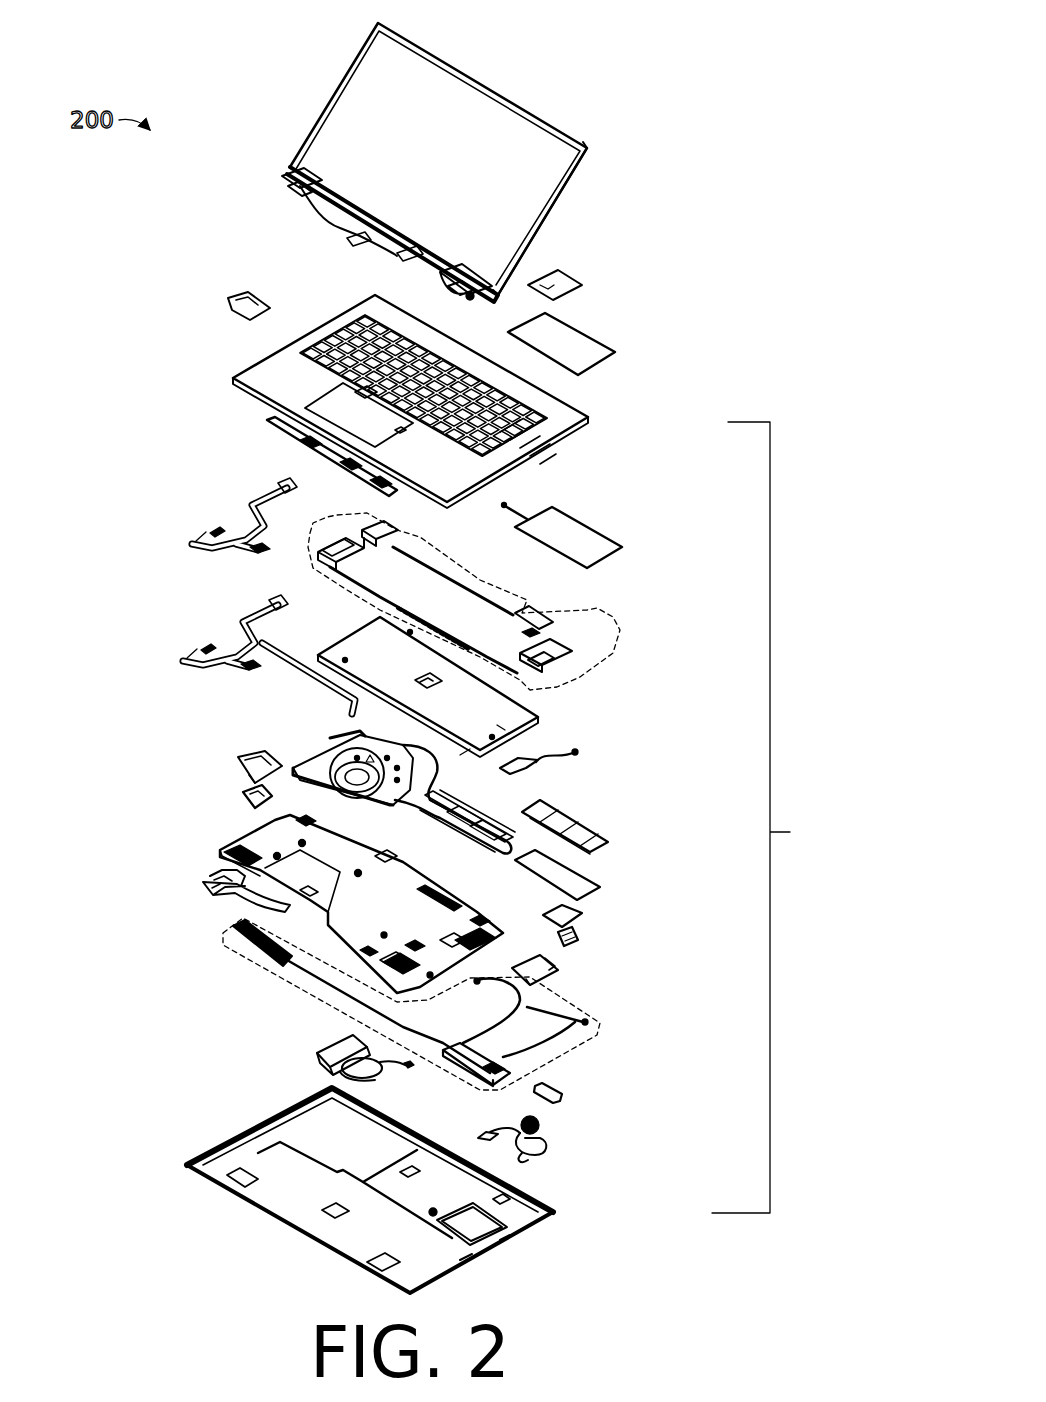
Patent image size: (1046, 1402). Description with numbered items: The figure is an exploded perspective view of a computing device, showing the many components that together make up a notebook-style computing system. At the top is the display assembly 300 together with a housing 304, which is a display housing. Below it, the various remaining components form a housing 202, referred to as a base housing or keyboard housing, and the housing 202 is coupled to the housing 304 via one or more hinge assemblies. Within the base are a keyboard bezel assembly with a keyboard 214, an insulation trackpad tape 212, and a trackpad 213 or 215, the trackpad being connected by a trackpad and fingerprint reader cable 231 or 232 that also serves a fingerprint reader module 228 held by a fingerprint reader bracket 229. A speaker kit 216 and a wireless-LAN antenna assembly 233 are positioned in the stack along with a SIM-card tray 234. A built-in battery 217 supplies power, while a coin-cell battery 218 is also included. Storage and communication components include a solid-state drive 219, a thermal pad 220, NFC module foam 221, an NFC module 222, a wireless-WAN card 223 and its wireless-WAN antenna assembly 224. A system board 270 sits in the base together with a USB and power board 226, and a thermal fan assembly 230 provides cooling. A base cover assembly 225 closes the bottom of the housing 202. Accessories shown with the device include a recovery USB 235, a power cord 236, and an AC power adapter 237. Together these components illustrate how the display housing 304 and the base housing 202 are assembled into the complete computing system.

The housing 202 is at (784, 817).
The display assembly 300 is at (502, 162).
The housing 304 is at (593, 160).
The insulation trackpad tape 212 is at (585, 283).
The trackpad 213 is at (588, 331).
The keyboard 214 is at (588, 422).
The trackpad 215 is at (583, 526).
The speaker kit 216 is at (530, 600).
The built-in battery 217 is at (535, 718).
The coin-cell battery 218 is at (565, 770).
The solid-state drive 219 is at (575, 817).
The thermal pad 220 is at (563, 875).
The NFC module foam 221 is at (583, 913).
The NFC module 222 is at (578, 940).
The wireless-WAN card 223 is at (555, 970).
The wireless-WAN antenna assembly 224 is at (600, 1058).
The base cover assembly 225 is at (553, 1213).
The USB and power board 226 is at (208, 890).
The fingerprint reader module 228 is at (243, 798).
The fingerprint reader bracket 229 is at (238, 770).
The thermal fan assembly 230 is at (298, 744).
The trackpad and fingerprint reader cable 231 is at (235, 620).
The trackpad and fingerprint reader cable 232 is at (245, 503).
The wireless-LAN antenna assembly 233 is at (268, 423).
The SIM-card tray 234 is at (228, 306).
The recovery USB 235 is at (560, 1090).
The power cord 236 is at (555, 1135).
The AC power adapter 237 is at (318, 1070).
The system board 270 is at (255, 835).